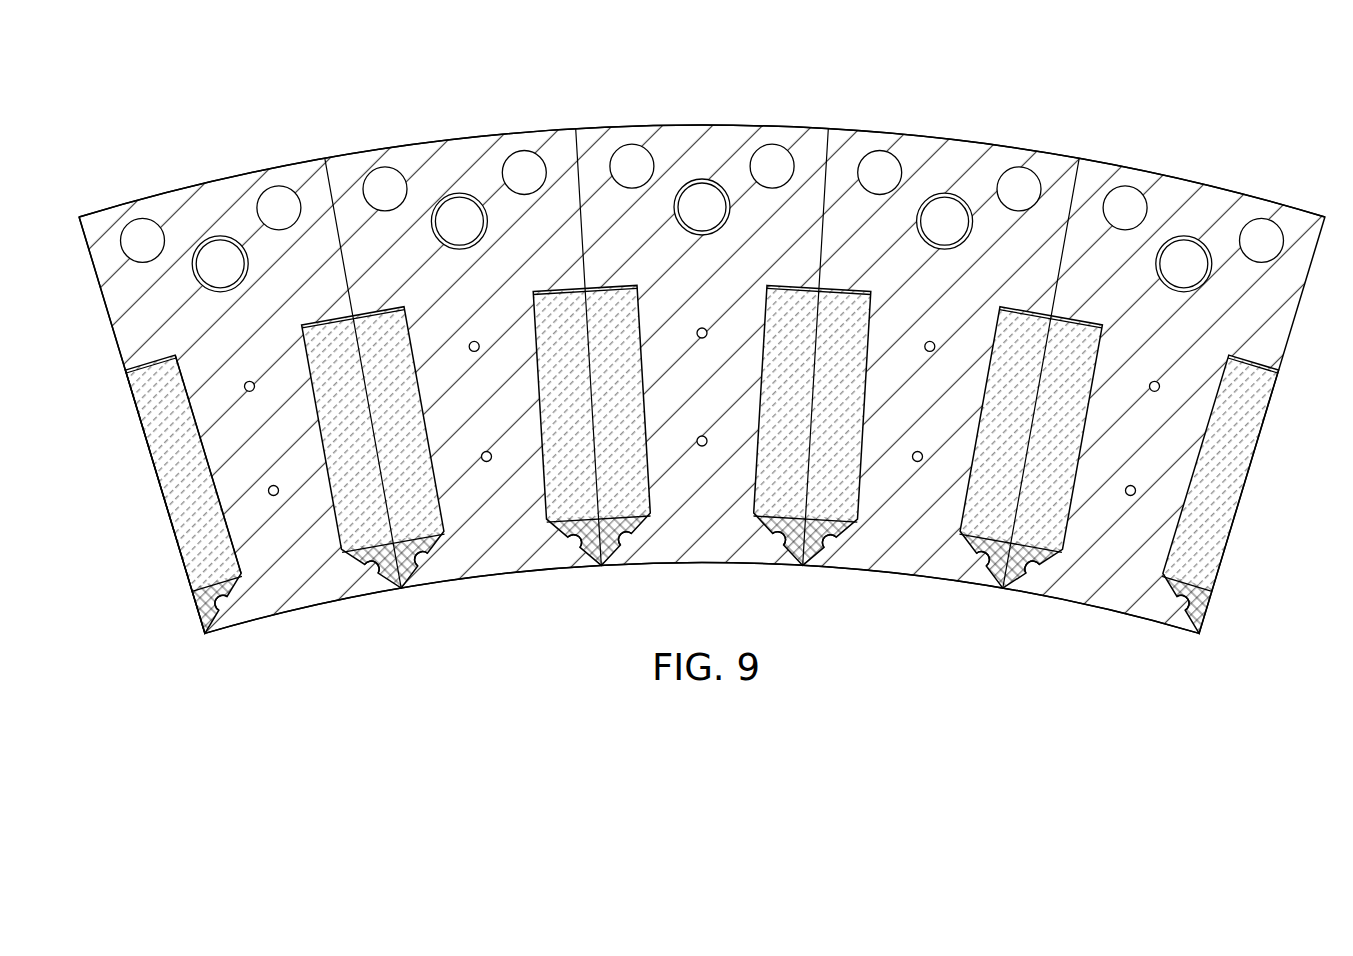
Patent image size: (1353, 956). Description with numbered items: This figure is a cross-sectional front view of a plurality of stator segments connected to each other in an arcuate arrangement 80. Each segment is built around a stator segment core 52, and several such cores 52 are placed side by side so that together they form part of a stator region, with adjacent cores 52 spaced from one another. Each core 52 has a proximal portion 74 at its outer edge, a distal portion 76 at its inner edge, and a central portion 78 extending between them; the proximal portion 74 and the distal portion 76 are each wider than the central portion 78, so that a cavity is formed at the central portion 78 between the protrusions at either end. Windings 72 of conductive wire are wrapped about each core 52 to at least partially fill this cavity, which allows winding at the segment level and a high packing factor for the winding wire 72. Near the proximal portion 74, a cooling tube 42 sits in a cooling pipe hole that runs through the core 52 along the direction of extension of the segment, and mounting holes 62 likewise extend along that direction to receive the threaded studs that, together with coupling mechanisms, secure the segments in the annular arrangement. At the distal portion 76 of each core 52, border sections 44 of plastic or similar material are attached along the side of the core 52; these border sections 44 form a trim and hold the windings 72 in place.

The assembly 80 is at (1300, 99).
The stator segment core 52 is at (695, 356).
The mounting holes 62 is at (142, 232).
The cooling tube 42 is at (213, 254).
The windings 72 is at (340, 346).
The central portion 78 is at (216, 458).
The proximal portion 74 is at (115, 340).
The distal portion 76 is at (212, 636).
The border sections 44 is at (384, 576).